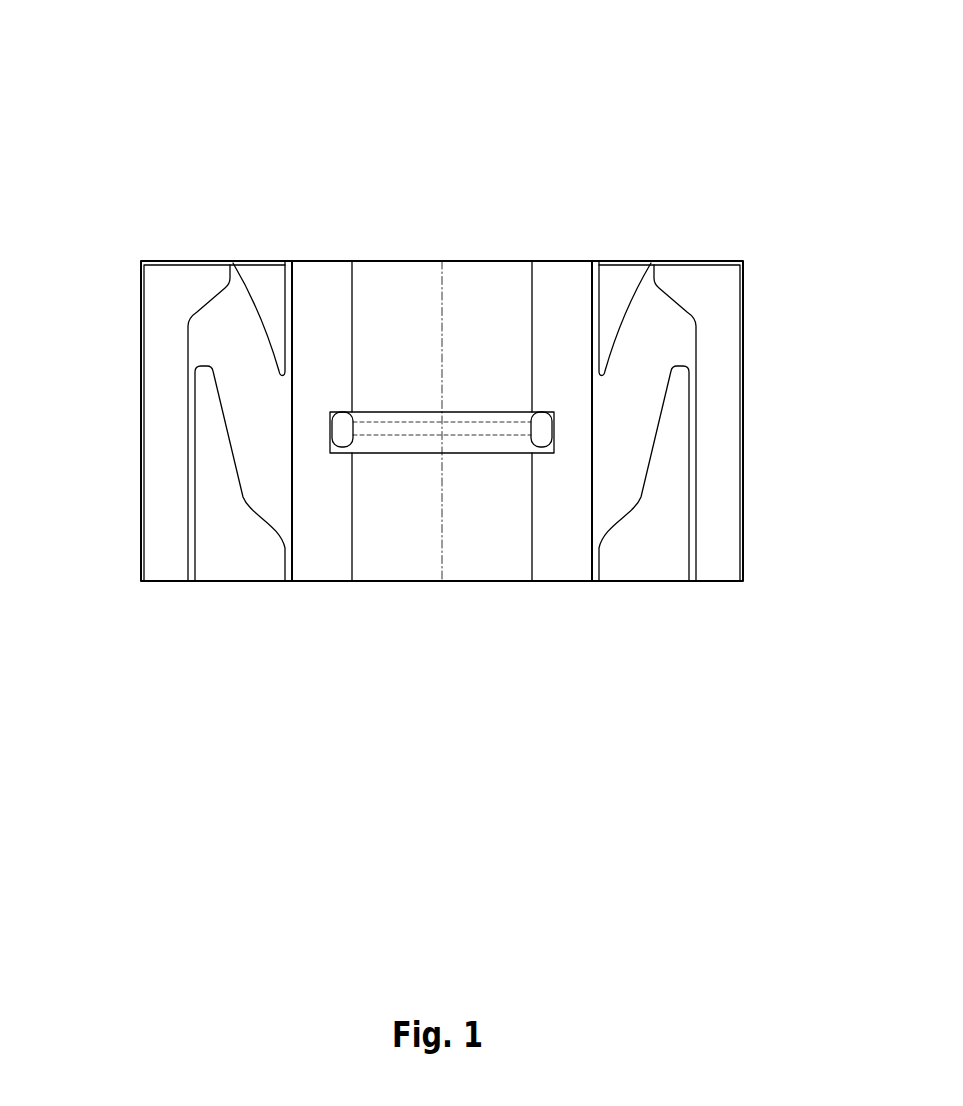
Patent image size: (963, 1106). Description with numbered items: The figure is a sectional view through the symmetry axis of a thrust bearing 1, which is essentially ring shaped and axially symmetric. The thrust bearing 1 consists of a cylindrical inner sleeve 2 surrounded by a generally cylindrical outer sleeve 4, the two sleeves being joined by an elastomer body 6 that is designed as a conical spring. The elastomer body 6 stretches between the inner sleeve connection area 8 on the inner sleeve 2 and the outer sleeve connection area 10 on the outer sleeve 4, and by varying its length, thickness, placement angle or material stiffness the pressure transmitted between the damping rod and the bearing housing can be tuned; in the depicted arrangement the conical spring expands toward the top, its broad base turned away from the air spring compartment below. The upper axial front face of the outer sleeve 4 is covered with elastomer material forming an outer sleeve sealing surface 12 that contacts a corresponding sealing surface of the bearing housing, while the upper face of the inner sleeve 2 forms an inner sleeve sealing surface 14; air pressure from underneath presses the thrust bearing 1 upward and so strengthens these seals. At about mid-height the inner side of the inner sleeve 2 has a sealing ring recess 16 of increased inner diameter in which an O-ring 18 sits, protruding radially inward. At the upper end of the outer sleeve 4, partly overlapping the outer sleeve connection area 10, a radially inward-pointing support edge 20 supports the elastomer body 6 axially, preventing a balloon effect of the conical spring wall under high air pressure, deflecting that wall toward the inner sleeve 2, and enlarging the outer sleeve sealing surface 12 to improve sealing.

The thrust bearing 1 is at (150, 38).
The inner sleeve 2 is at (563, 338).
The outer sleeve 4 is at (715, 405).
The elastomer body 6 is at (622, 432).
The inner sleeve connection area 8 is at (287, 478).
The outer sleeve connection area 10 is at (190, 312).
The outer sleeve sealing surface 12 is at (188, 263).
The inner sleeve sealing surface 14 is at (318, 263).
The sealing ring recess 16 is at (337, 418).
The O-ring 18 is at (343, 430).
The support edge 20 is at (682, 278).